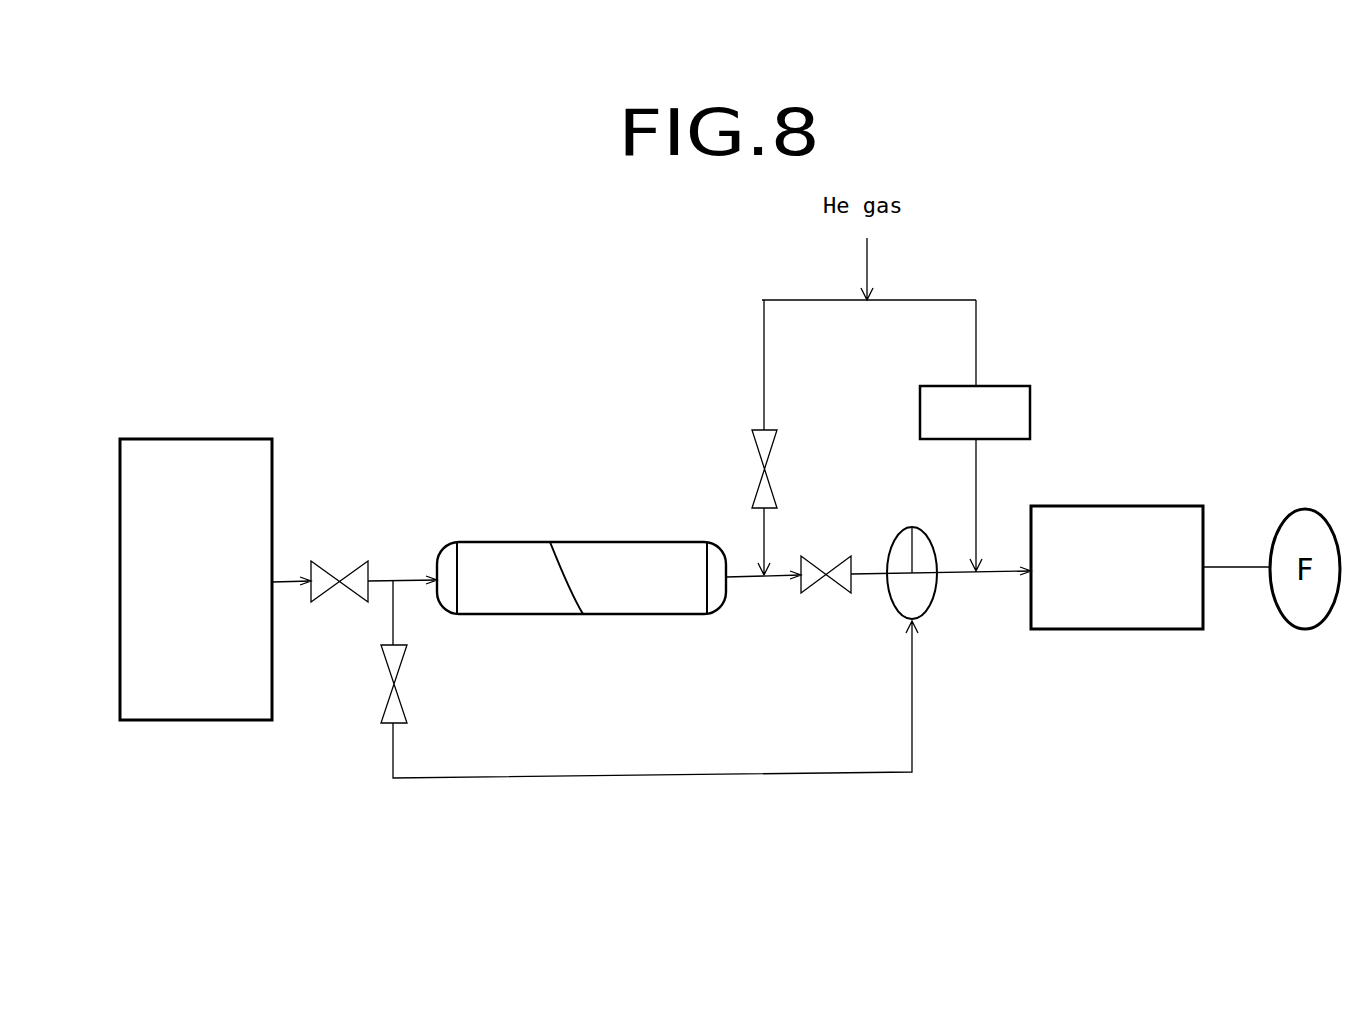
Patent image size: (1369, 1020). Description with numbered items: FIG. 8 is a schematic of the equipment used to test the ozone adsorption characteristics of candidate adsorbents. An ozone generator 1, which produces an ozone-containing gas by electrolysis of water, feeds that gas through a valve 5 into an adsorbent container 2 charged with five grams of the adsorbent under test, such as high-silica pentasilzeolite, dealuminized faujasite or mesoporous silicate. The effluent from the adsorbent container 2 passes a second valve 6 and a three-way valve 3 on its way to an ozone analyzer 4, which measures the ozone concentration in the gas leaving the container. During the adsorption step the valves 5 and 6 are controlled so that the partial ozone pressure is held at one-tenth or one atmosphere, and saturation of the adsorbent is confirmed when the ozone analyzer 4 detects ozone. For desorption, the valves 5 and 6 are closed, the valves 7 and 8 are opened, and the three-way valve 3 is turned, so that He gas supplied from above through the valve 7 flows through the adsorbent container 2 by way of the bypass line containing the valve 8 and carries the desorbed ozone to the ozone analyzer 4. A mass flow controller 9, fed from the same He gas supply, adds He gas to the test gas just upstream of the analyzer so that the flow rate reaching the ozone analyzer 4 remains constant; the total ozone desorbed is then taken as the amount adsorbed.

The ozone generator 1 is at (208, 439).
The adsorbent container 2 is at (568, 542).
The three-way valve 3 is at (936, 592).
The ozone analyzer 4 is at (1114, 506).
The valve 5 is at (331, 578).
The valve 6 is at (816, 593).
The valve 7 is at (752, 432).
The valve 8 is at (400, 706).
The mass flow controller 9 is at (1000, 386).